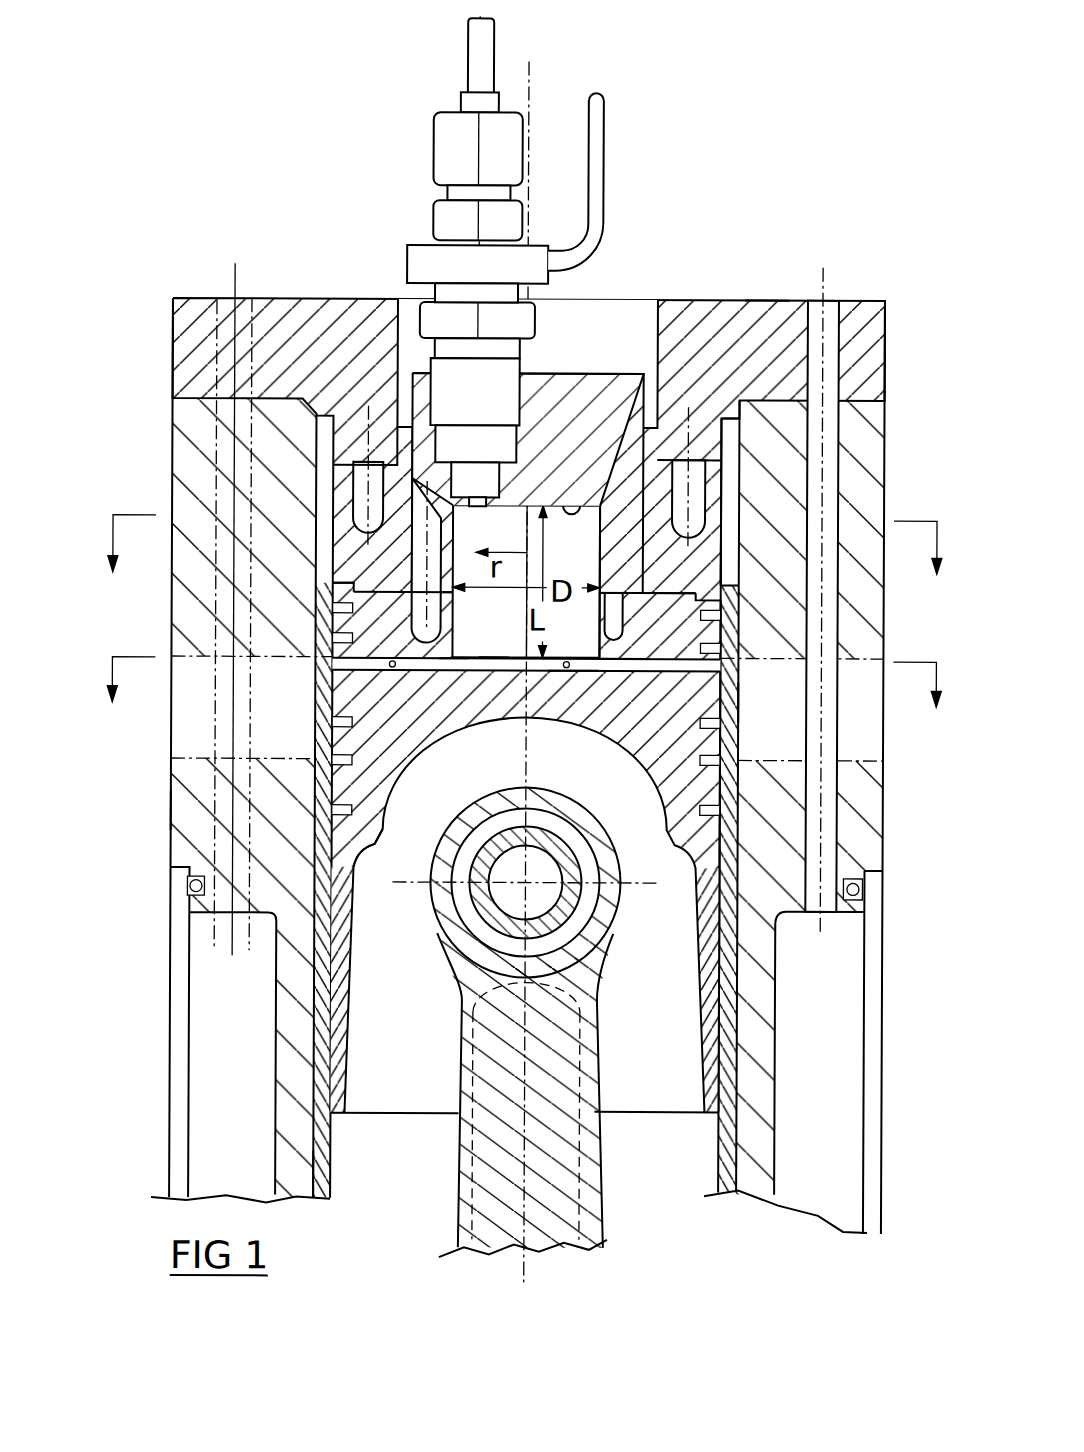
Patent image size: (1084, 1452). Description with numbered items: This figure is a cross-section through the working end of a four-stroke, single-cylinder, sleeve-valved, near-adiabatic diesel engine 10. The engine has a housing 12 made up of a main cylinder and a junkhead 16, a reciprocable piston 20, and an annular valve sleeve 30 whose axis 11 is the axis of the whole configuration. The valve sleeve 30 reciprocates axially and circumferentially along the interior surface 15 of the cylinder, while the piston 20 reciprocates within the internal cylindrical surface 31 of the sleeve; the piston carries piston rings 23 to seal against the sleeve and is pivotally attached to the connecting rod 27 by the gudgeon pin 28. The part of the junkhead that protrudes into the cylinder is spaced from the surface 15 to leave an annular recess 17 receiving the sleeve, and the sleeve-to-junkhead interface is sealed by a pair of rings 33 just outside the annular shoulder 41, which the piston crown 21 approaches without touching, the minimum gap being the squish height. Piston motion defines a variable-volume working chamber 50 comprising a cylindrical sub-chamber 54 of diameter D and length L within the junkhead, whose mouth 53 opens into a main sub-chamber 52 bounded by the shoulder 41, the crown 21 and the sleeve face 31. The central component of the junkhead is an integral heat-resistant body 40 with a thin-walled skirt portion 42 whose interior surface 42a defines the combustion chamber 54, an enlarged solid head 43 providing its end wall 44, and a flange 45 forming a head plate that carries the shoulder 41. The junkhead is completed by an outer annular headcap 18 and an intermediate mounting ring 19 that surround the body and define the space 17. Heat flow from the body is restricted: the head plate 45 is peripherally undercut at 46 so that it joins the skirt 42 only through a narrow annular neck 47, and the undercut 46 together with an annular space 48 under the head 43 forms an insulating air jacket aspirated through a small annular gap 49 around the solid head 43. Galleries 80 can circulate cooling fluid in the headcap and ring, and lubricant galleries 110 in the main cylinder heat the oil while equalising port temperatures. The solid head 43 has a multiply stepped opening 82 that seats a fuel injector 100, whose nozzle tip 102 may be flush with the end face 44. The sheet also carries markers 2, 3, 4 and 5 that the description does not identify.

The section line II-II 2 is at (525, 587).
The section line III-III 3 is at (524, 709).
The cylinder 4 is at (162, 808).
The piston inner wall 5 is at (398, 667).
The diesel engine 10 is at (803, 181).
The axis 11 is at (530, 158).
The housing 12 is at (152, 298).
The interior surface 15 is at (333, 1163).
The junkhead 16 is at (268, 296).
The annular recess 17 is at (735, 445).
The headcap 18 is at (765, 330).
The mounting ring 19 is at (692, 560).
The piston 20 is at (342, 858).
The piston crown 21 is at (571, 670).
The piston rings 23 is at (714, 808).
The connecting rod 27 is at (582, 1170).
The gudgeon pin 28 is at (547, 905).
The valve sleeve 30 is at (324, 1000).
The internal cylindrical surface 31 is at (336, 1052).
The sealing rings 33 is at (714, 646).
The heat-resistant body 40 is at (612, 460).
The annular shoulder 41 is at (657, 670).
The skirt portion 42 is at (684, 420).
The interior surface 42a is at (599, 570).
The solid head 43 is at (580, 410).
The end wall 44 is at (602, 368).
The flange 45 is at (752, 697).
The undercut 46 is at (430, 607).
The annular neck 47 is at (624, 670).
The annular space 48 is at (423, 556).
The annular gap 49 is at (432, 620).
The working chamber 50 is at (452, 670).
The sub-chamber 52 is at (330, 660).
The mouth 53 is at (503, 670).
The combustion sub-chamber 54 is at (588, 642).
The cooling galleries 80 is at (367, 485).
The stepped opening 82 is at (527, 413).
The fuel injector 100 is at (433, 168).
The nozzle tip 102 is at (470, 502).
The lubricant galleries 110 is at (826, 483).